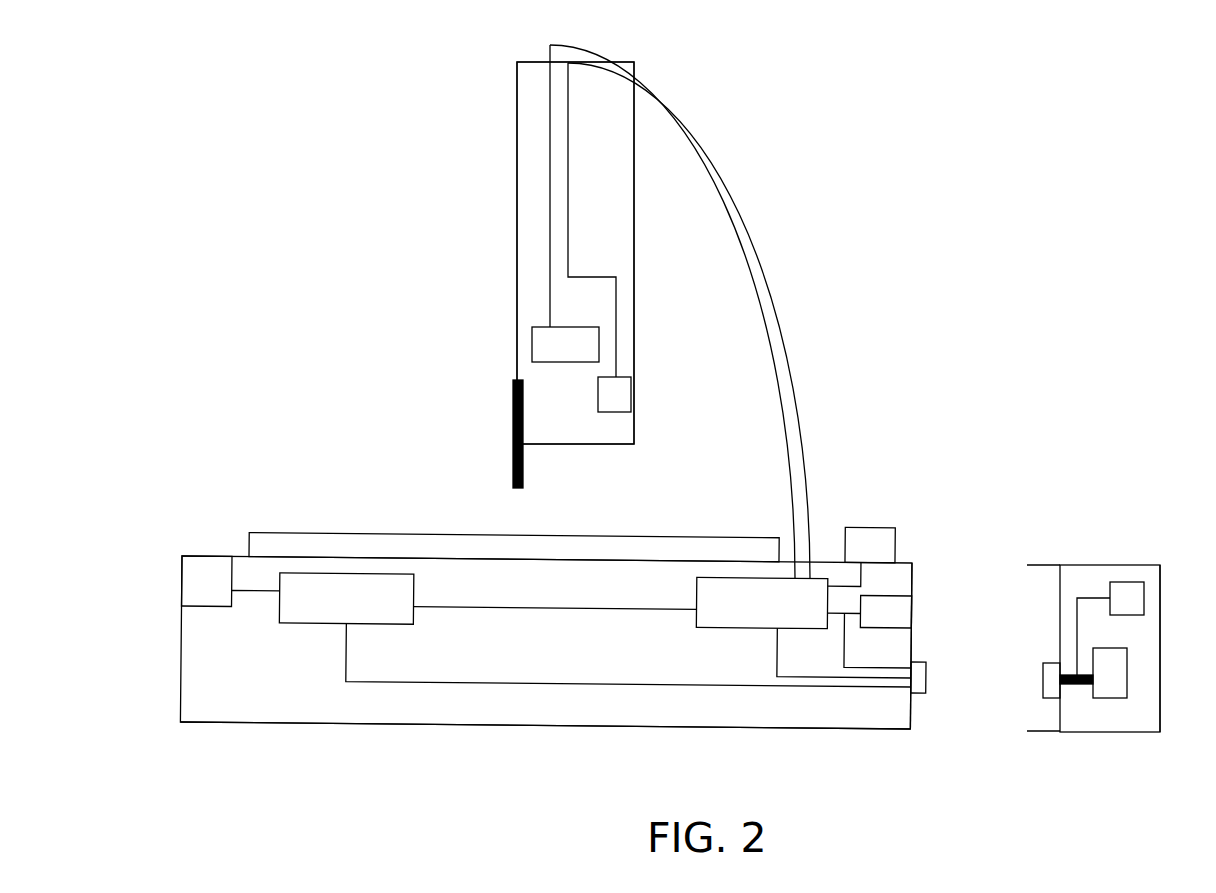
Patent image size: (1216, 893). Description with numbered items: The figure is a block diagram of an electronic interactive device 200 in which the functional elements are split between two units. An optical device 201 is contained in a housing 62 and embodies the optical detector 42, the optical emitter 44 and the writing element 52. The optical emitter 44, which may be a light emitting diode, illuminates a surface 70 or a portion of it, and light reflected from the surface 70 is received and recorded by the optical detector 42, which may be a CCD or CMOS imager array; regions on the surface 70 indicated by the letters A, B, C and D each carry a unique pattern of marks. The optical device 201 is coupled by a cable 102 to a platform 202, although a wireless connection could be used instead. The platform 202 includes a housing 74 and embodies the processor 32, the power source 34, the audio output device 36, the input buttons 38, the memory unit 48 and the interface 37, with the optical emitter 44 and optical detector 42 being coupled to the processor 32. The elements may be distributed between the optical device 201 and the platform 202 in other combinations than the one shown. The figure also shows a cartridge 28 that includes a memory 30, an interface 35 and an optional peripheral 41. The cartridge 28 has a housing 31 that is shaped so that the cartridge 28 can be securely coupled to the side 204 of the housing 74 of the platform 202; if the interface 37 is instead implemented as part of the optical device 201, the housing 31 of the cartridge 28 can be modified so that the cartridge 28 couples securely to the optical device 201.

The electronic interactive device 200 is at (774, 104).
The optical device 201 is at (517, 250).
The housing 62 is at (633, 272).
The optical detector 42 is at (577, 354).
The optical emitter 44 is at (626, 404).
The writing element 52 is at (515, 423).
The cable 102 is at (797, 393).
The housing 74 is at (182, 630).
The platform 202 is at (308, 723).
The side 204 is at (912, 578).
The surface 70 is at (249, 531).
The audio output device 36 is at (218, 590).
The power source 34 is at (358, 606).
The processor 32 is at (773, 606).
The input buttons 38 is at (881, 547).
The memory unit 48 is at (897, 614).
The interface 37 is at (913, 695).
The cartridge 28 is at (1090, 538).
The housing 31 is at (1160, 665).
The interface 35 is at (1043, 681).
The optional peripheral 41 is at (1138, 607).
The memory 30 is at (1121, 682).